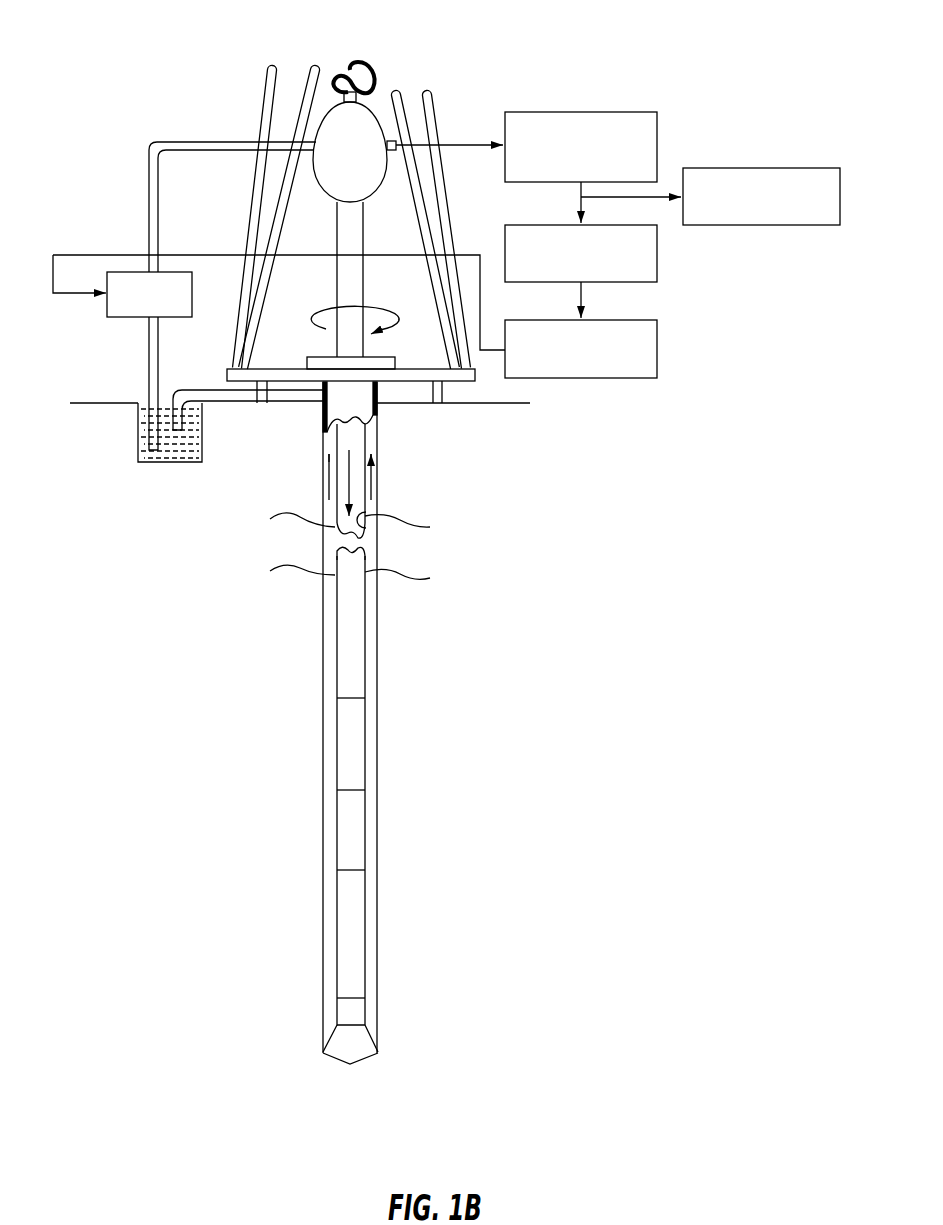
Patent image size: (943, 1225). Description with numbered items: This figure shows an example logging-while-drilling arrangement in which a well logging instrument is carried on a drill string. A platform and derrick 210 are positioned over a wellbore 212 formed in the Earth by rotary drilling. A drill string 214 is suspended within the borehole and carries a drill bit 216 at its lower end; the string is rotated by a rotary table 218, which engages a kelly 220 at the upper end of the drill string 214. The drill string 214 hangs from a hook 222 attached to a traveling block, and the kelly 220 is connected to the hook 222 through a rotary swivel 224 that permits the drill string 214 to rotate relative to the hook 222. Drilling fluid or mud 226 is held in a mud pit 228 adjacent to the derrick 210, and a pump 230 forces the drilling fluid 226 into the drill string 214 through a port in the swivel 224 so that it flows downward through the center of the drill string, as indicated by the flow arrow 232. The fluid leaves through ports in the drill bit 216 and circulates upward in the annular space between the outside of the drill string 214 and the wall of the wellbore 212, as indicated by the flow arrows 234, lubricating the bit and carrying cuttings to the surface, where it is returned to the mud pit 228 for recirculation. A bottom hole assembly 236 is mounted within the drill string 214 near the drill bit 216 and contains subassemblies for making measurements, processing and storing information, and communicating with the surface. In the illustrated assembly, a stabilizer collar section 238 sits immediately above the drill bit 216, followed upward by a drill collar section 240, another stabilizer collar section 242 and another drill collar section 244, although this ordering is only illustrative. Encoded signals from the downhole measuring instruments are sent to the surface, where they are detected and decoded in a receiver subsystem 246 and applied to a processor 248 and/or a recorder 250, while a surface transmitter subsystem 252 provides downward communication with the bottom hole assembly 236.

The platform and derrick 210 is at (484, 379).
The wellbore 212 is at (367, 535).
The drill string 214 is at (357, 614).
The drill bit 216 is at (347, 1038).
The rotary table 218 is at (360, 363).
The kelly 220 is at (348, 227).
The hook 222 is at (362, 62).
The rotary swivel 224 is at (345, 138).
The drilling fluid 226 is at (175, 445).
The mud pit 228 is at (140, 422).
The pump 230 is at (143, 272).
The flow arrow 232 is at (352, 500).
The flow arrows 234 is at (374, 482).
The bottom hole assembly 236 is at (427, 1007).
The stabilizer collar section 238 is at (345, 912).
The drill collar section 240 is at (345, 830).
The stabilizer collar section 242 is at (345, 747).
The drill collar section 244 is at (337, 655).
The receiver subsystem 246 is at (595, 112).
The processor 248 is at (657, 270).
The recorder 250 is at (775, 168).
The surface transmitter subsystem 252 is at (657, 355).